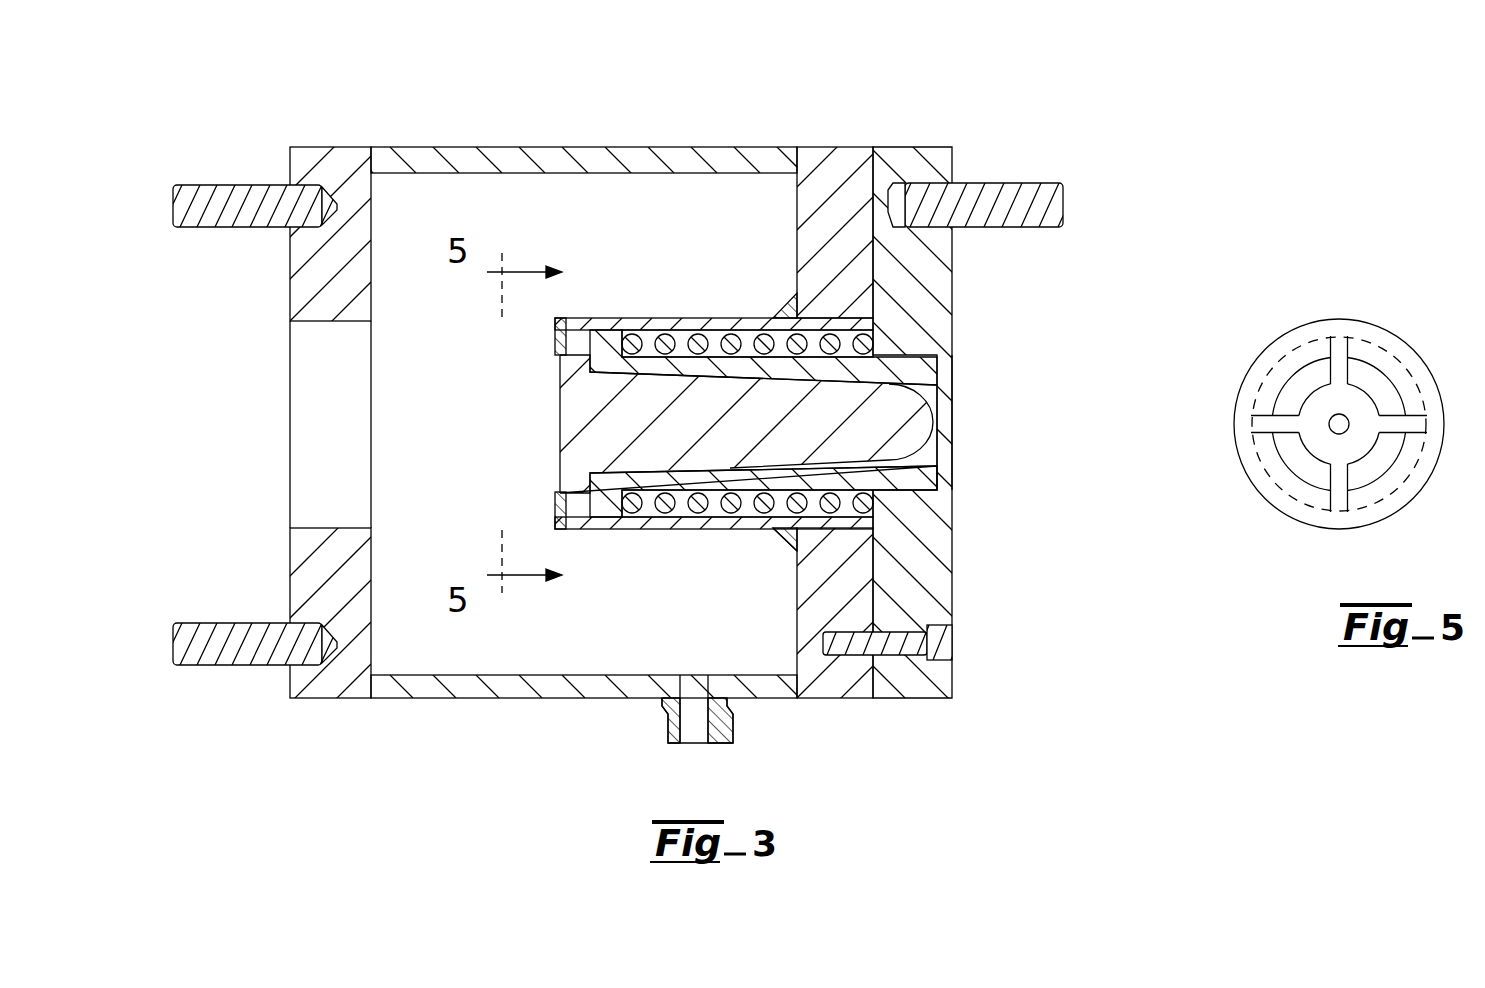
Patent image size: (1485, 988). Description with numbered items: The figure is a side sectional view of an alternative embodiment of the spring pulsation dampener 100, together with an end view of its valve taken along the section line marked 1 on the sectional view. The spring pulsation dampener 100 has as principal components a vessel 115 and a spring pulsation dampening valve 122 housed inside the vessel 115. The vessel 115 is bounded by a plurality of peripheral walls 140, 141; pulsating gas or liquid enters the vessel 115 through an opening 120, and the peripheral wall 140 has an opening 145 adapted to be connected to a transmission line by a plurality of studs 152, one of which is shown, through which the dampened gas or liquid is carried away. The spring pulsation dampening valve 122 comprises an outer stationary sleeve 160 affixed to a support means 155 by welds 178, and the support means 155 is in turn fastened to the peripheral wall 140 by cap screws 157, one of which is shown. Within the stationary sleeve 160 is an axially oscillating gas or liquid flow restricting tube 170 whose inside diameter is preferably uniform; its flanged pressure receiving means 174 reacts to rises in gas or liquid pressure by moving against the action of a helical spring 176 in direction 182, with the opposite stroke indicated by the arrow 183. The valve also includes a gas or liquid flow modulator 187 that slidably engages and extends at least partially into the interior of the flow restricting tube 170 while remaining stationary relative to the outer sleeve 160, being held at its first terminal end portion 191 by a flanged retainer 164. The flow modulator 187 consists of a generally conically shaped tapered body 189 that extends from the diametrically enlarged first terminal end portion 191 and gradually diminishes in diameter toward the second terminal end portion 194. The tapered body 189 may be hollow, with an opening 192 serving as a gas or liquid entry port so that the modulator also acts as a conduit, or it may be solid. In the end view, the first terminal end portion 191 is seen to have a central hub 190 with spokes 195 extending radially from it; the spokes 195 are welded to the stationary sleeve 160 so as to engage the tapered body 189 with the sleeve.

In FIG. 3, the pump assembly 1 is at (446, 433).
In FIG. 3, the spring pulsation dampener 100 is at (703, 78).
In FIG. 3, the vessel 115 is at (460, 147).
In FIG. 3, the opening 120 is at (307, 407).
In FIG. 3, the spring pulsation dampening valve 122 is at (596, 295).
In FIG. 3, the peripheral wall 140 is at (938, 283).
In FIG. 3, the peripheral wall 141 is at (560, 698).
In FIG. 3, the opening 145 is at (943, 423).
In FIG. 3, the stud 152 is at (1010, 183).
In FIG. 3, the support means 155 is at (835, 165).
In FIG. 3, the cap screw 157 is at (952, 640).
In FIG. 3, the outer stationary sleeve 160 is at (655, 517).
In FIG. 5, the outer stationary sleeve 160 is at (1300, 325).
In FIG. 3, the flanged retainer 164 is at (555, 332).
In FIG. 5, the flanged retainer 164 is at (1262, 386).
In FIG. 3, the gas or liquid flow restricting tube 170 is at (937, 455).
In FIG. 3, the flanged pressure receiving means 174 is at (612, 517).
In FIG. 3, the helical spring 176 is at (748, 529).
In FIG. 3, the weld 178 is at (797, 547).
In FIG. 3, the direction 182 is at (712, 282).
In FIG. 3, the return stroke direction 183 is at (665, 293).
In FIG. 3, the gas or liquid flow modulator 187 is at (540, 470).
In FIG. 3, the tapered body 189 is at (703, 453).
In FIG. 3, the central hub 190 is at (562, 383).
In FIG. 5, the central hub 190 is at (1362, 410).
In FIG. 3, the first terminal end portion 191 is at (562, 428).
In FIG. 5, the opening 192 is at (1337, 432).
In FIG. 3, the second terminal end portion 194 is at (917, 402).
In FIG. 5, the spoke 195 is at (1343, 368).